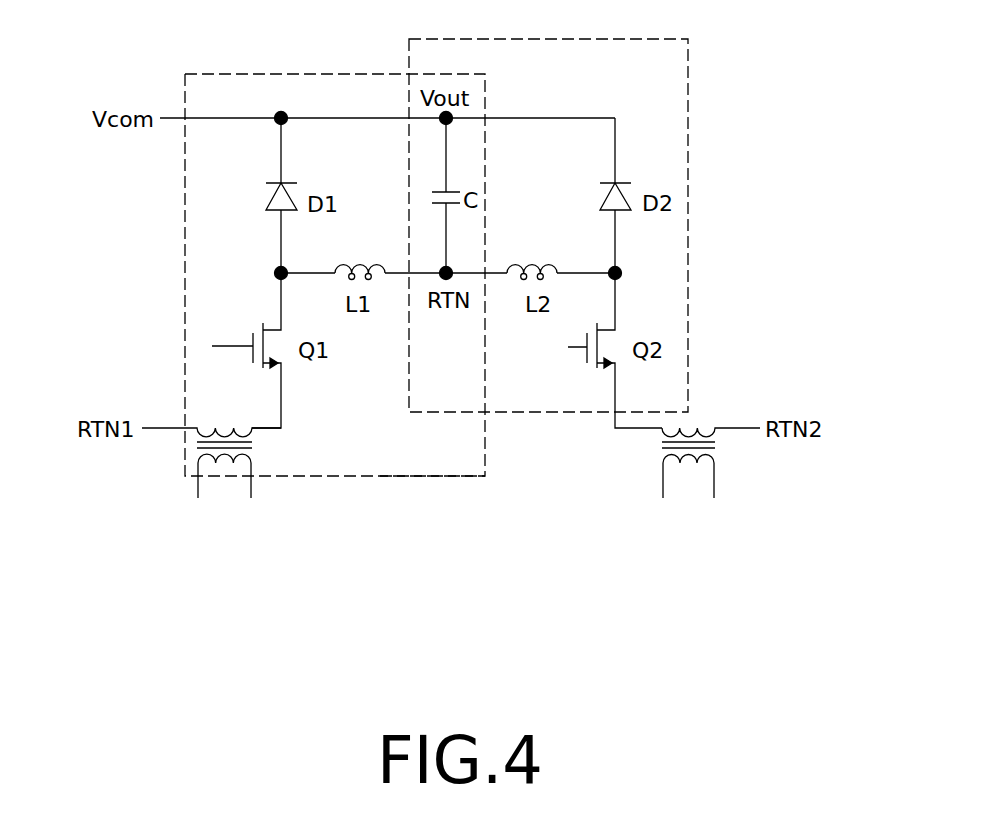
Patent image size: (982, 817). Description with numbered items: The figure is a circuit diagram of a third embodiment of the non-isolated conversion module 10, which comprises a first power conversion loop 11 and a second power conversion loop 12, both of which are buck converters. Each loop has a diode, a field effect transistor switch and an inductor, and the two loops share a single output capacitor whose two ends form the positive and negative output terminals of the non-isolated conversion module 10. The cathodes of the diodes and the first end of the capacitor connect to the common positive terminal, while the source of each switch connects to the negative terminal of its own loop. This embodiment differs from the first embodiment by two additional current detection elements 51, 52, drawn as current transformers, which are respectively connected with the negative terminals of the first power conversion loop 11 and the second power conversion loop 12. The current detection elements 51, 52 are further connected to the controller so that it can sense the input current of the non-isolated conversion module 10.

The non-isolated conversion module 10 is at (198, 70).
The first power conversion loop 11 is at (380, 477).
The second power conversion loop 12 is at (689, 158).
The current detection element 51 is at (211, 446).
The current detection element 52 is at (711, 450).